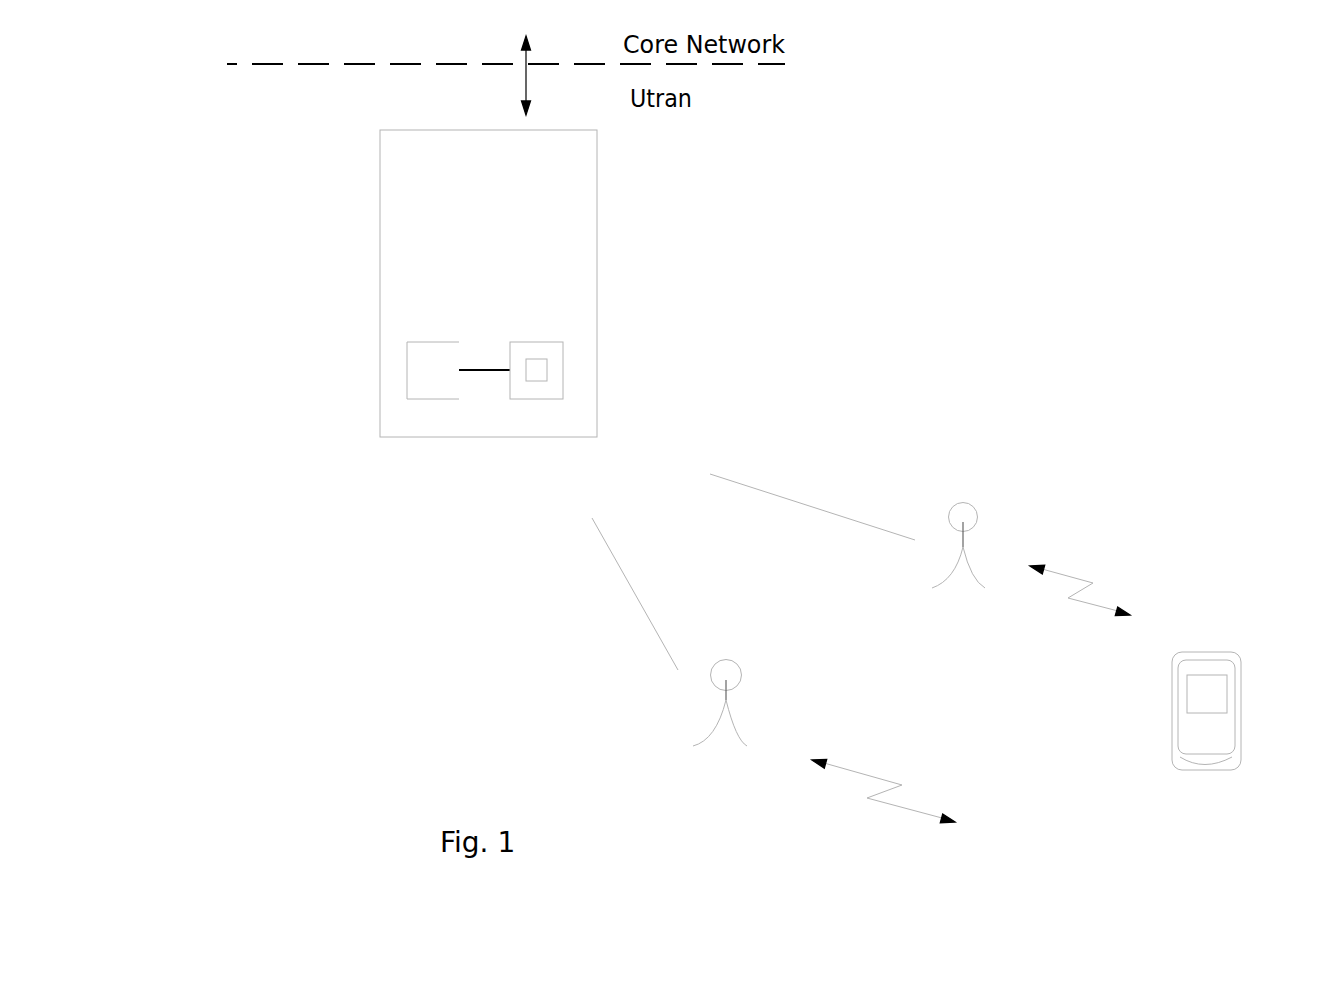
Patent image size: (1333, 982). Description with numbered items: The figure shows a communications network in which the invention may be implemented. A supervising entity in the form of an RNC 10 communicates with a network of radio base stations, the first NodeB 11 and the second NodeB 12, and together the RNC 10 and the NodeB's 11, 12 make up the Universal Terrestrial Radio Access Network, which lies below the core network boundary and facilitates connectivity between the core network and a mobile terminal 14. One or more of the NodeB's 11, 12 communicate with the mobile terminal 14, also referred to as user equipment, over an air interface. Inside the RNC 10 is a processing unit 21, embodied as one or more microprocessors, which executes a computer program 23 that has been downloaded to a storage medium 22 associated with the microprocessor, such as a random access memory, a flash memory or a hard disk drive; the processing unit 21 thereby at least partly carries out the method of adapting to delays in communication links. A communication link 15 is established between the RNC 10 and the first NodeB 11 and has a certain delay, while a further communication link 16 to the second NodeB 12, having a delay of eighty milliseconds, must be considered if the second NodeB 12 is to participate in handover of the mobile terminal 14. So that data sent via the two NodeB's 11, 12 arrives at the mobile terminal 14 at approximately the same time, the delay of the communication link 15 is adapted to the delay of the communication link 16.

The RNC 10 is at (418, 165).
The processing unit 21 is at (429, 377).
The storage medium 22 is at (553, 348).
The computer program 23 is at (551, 371).
The communication link 15 is at (812, 505).
The communication link 16 is at (635, 594).
The first NodeB 11 is at (963, 503).
The second NodeB 12 is at (730, 660).
The mobile terminal 14 is at (1235, 652).